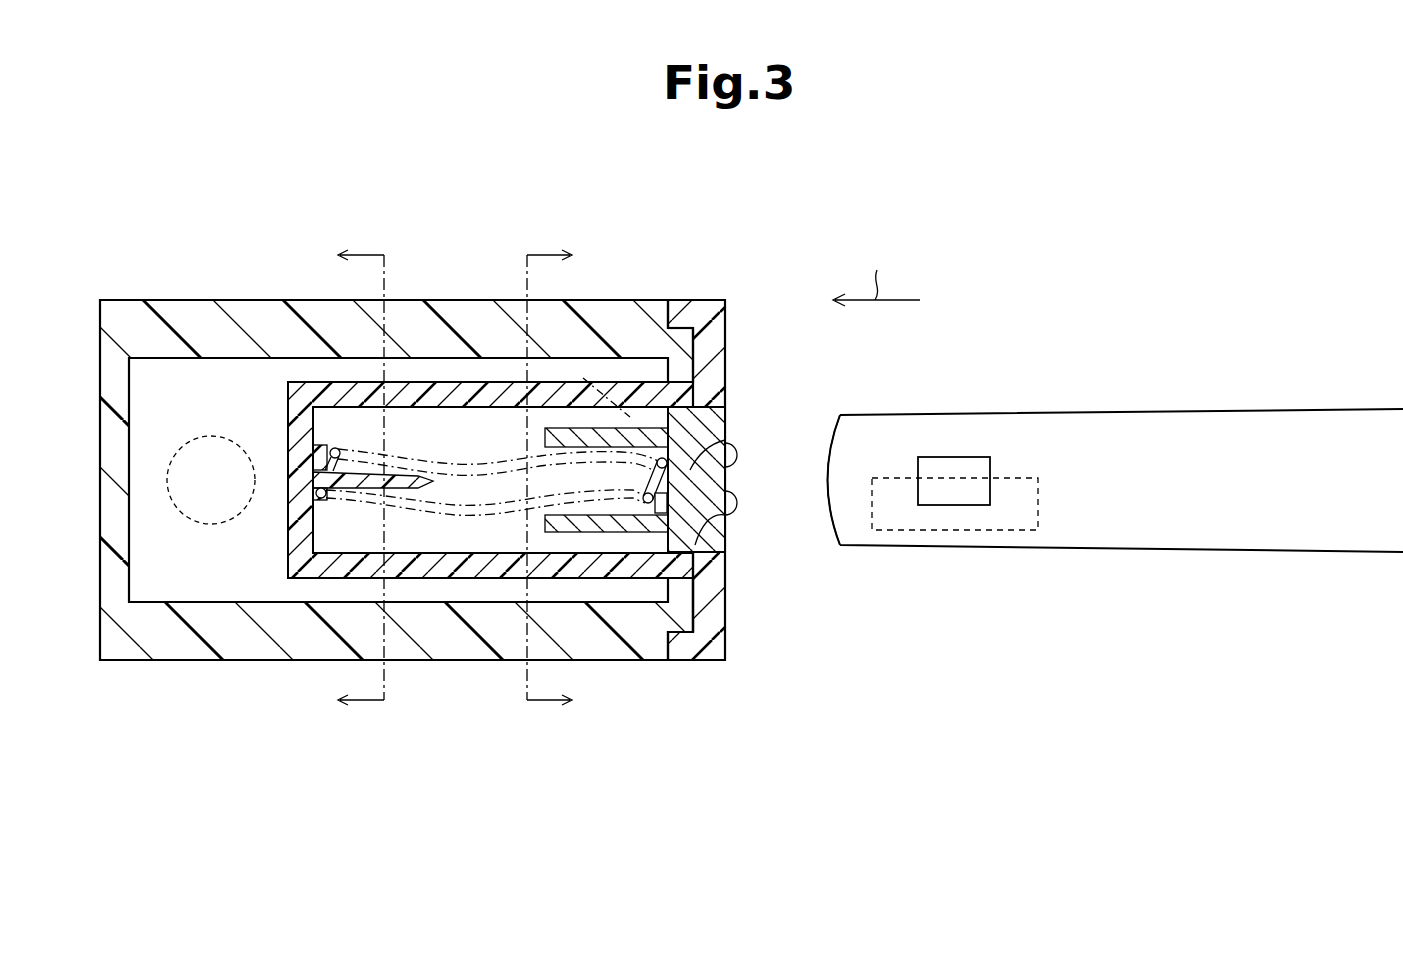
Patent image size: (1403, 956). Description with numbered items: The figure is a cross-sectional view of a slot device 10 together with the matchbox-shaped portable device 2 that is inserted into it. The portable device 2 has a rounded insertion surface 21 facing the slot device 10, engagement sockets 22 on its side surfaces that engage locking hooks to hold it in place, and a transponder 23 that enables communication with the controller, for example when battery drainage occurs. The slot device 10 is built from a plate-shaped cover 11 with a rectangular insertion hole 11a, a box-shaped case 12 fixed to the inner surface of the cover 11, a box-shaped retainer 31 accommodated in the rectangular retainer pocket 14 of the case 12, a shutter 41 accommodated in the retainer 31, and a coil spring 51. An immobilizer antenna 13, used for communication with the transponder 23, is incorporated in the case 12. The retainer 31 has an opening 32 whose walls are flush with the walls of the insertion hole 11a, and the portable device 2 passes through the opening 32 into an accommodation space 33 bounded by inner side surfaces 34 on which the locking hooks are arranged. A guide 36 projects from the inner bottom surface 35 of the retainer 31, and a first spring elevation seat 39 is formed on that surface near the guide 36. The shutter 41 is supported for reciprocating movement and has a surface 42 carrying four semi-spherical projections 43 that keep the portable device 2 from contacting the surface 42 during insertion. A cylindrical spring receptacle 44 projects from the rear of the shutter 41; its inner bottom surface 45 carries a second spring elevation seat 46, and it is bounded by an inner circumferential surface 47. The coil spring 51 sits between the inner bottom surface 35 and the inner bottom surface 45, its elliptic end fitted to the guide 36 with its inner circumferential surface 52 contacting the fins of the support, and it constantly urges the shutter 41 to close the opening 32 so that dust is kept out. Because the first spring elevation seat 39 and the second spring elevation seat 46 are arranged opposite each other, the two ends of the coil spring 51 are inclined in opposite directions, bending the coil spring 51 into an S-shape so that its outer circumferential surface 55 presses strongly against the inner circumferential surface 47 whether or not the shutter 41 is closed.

The portable device 2 is at (977, 293).
The slot device 10 is at (633, 183).
The cover 11 is at (712, 300).
The insertion hole 11a is at (723, 553).
The case 12 is at (190, 300).
The immobilizer antenna 13 is at (196, 523).
The retainer pocket 14 is at (610, 363).
The insertion surface 21 is at (835, 420).
The engagement socket 22 is at (985, 467).
The transponder 23 is at (1040, 506).
The retainer 31 is at (428, 382).
The opening 32 is at (660, 515).
The accommodation space 33 is at (410, 540).
The inner side surfaces 34 is at (480, 548).
The inner bottom surface 35 is at (318, 528).
The guide 36 is at (348, 488).
The first spring elevation seat 39 is at (326, 455).
The shutter 41 is at (705, 420).
The surface 42 is at (725, 438).
The semi-spherical projections 43 is at (738, 457).
The spring receptacle 44 is at (603, 523).
The inner bottom surface 45 is at (738, 503).
The second spring elevation seat 46 is at (725, 546).
The inner circumferential surface 47 is at (582, 528).
The coil spring 51 is at (500, 460).
The inner circumferential surface 52 is at (470, 480).
The outer circumferential surface 55 is at (583, 378).